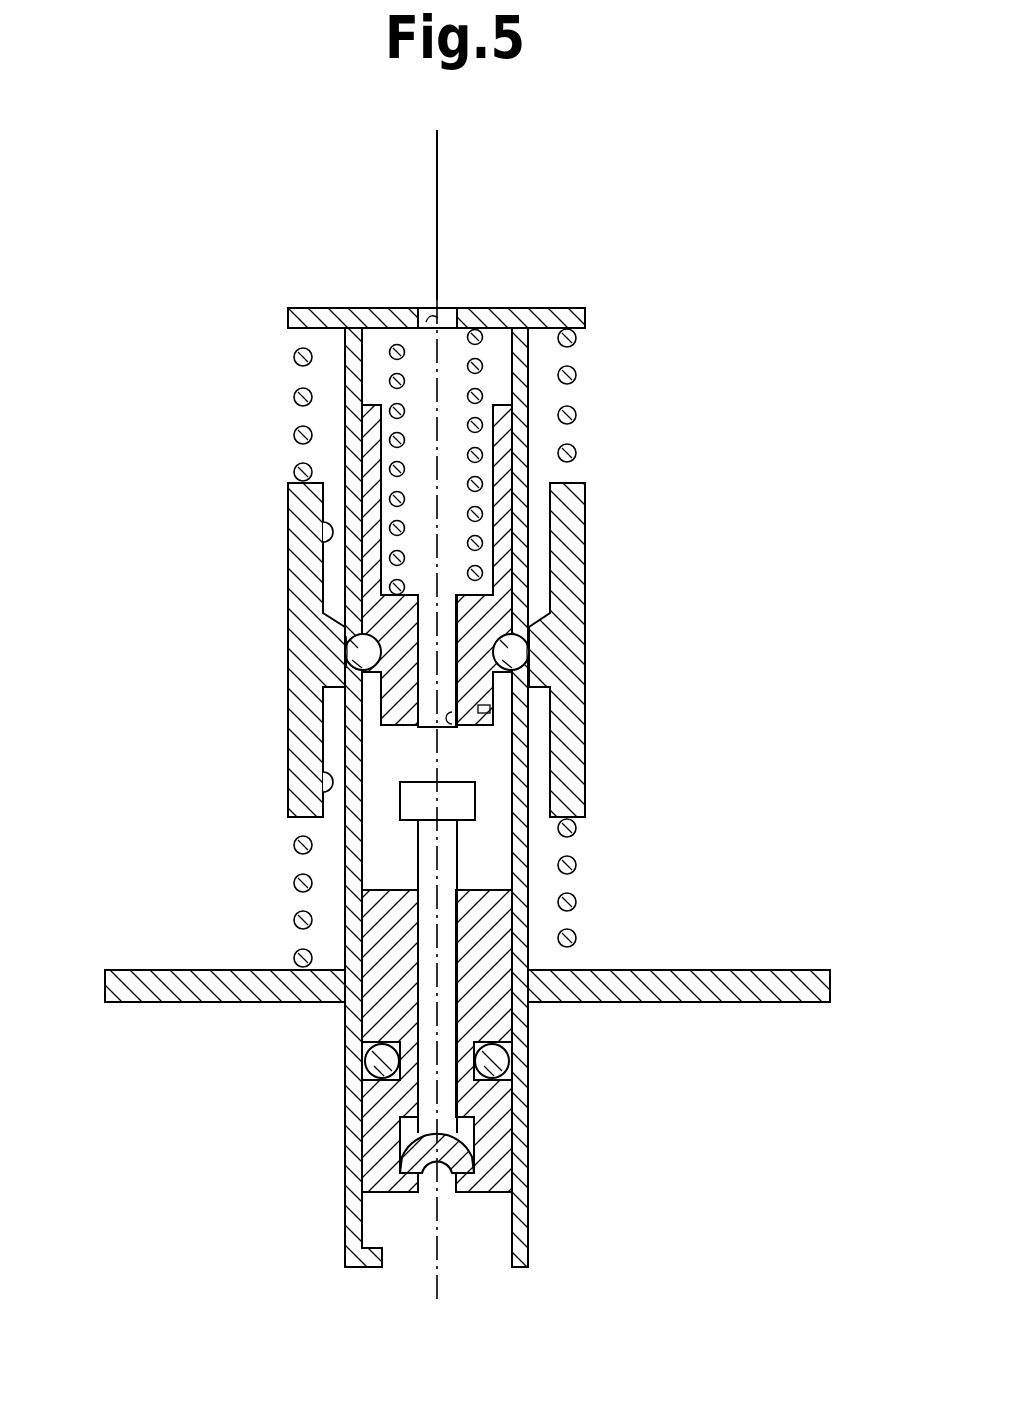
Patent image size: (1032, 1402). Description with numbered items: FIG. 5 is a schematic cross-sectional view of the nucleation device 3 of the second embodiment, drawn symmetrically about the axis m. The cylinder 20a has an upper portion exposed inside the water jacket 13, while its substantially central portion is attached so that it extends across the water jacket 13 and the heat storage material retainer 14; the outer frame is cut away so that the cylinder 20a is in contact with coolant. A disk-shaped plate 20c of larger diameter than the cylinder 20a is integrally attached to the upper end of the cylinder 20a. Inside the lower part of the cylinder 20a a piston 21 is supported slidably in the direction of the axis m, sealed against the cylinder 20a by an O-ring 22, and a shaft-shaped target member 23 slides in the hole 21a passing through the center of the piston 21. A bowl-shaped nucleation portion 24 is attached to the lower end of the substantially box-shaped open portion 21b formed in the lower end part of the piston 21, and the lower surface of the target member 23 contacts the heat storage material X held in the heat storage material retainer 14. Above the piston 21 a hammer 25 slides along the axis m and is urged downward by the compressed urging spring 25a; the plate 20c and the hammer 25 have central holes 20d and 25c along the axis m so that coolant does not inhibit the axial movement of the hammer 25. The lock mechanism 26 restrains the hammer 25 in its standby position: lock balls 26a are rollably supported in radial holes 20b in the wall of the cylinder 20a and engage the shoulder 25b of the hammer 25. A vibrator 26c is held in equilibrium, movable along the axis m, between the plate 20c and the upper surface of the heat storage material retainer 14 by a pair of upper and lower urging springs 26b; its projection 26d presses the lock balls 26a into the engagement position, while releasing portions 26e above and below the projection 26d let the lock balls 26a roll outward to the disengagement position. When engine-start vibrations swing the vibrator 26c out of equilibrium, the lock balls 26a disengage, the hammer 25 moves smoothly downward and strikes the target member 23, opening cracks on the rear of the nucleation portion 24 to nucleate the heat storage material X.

The nucleation device 3 is at (308, 1224).
The water jacket 13 is at (799, 654).
The heat storage material retainer 14 is at (720, 970).
The cylinder 20a is at (530, 435).
The holes 20b is at (528, 665).
The plate 20c is at (555, 310).
The hole 20d is at (430, 318).
The piston 21 is at (503, 1113).
The hole 21a is at (450, 990).
The open portion 21b is at (408, 1133).
The O-ring 22 is at (362, 1062).
The target member 23 is at (415, 852).
The nucleation portion 24 is at (470, 1153).
The hammer 25 is at (480, 708).
The urging spring 25a is at (397, 372).
The shoulder 25b is at (530, 658).
The hole 25c is at (452, 718).
The lock mechanism 26 is at (620, 752).
The lock balls 26a is at (522, 640).
The urging springs 26b is at (578, 375).
The vibrator 26c is at (583, 528).
The projection 26d is at (350, 640).
The releasing portions 26e is at (325, 520).
The axis m is at (440, 221).
The heat storage material X is at (667, 1149).